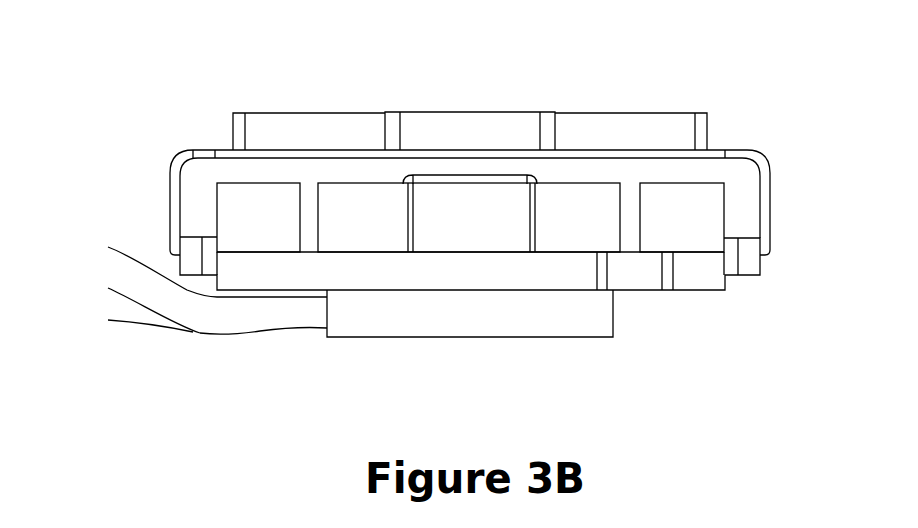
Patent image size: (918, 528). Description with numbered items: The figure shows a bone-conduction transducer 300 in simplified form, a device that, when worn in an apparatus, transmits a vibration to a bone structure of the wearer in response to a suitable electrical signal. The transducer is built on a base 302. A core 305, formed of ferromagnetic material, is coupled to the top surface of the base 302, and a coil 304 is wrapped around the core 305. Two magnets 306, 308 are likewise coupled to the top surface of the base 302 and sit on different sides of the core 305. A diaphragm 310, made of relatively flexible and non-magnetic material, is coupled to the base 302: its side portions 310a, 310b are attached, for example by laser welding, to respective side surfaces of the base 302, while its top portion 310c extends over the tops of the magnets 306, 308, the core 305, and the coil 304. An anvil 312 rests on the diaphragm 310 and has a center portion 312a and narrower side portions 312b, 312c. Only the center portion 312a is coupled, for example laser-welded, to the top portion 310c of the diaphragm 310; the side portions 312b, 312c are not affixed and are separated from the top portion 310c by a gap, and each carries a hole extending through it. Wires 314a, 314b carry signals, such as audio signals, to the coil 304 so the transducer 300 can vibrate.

The bone-conduction transducer 300 is at (718, 54).
The base 302 is at (732, 268).
The coil 304 is at (380, 240).
The core 305 is at (523, 178).
The magnet 306 is at (267, 237).
The magnet 308 is at (680, 235).
The diaphragm 310 is at (160, 187).
The side portion 310a is at (177, 230).
The side portion 310b is at (767, 205).
The top portion 310c is at (223, 152).
The anvil 312 is at (476, 100).
The center portion 312a is at (420, 122).
The side portion 312b is at (303, 128).
The side portion 312c is at (598, 123).
The wire 314a is at (133, 325).
The wire 314b is at (221, 332).